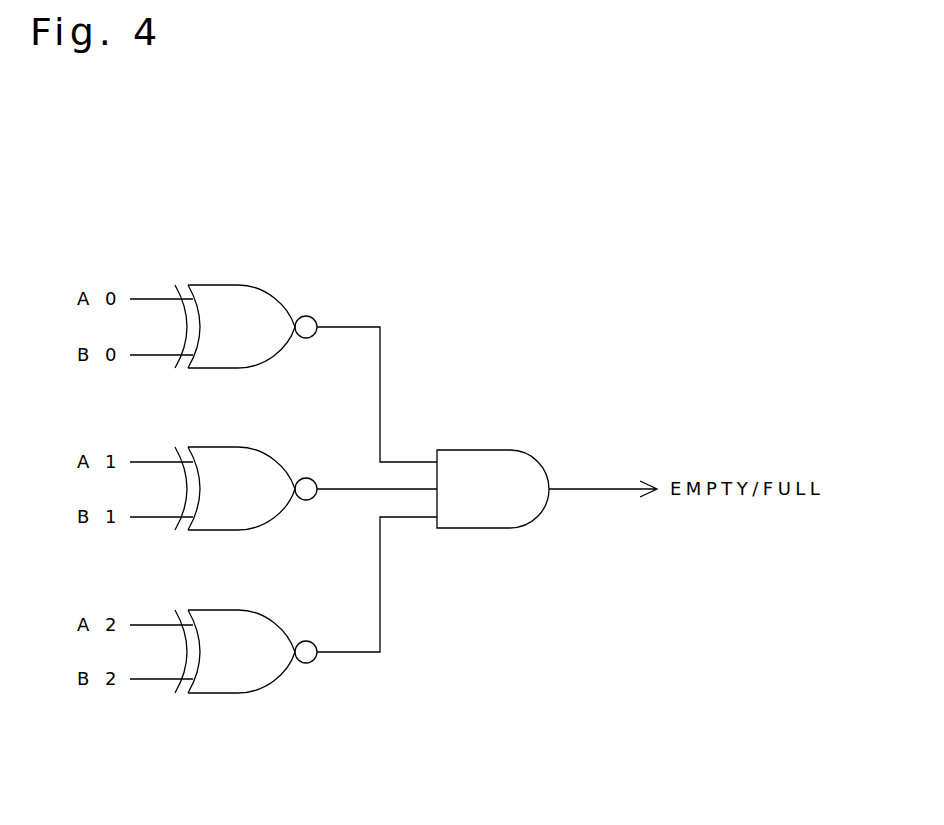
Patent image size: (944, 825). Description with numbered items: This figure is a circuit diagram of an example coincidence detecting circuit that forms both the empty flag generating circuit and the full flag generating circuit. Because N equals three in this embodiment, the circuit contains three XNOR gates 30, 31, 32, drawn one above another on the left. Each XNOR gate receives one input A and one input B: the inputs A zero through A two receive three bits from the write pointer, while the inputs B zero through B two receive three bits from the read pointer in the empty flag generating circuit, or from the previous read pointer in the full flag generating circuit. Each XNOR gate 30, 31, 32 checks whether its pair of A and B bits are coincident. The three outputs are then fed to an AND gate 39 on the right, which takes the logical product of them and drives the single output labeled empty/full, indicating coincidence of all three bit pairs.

The XNOR gate 30 is at (240, 300).
The XNOR gate 31 is at (260, 473).
The XNOR gate 32 is at (263, 635).
The AND gate 39 is at (492, 463).